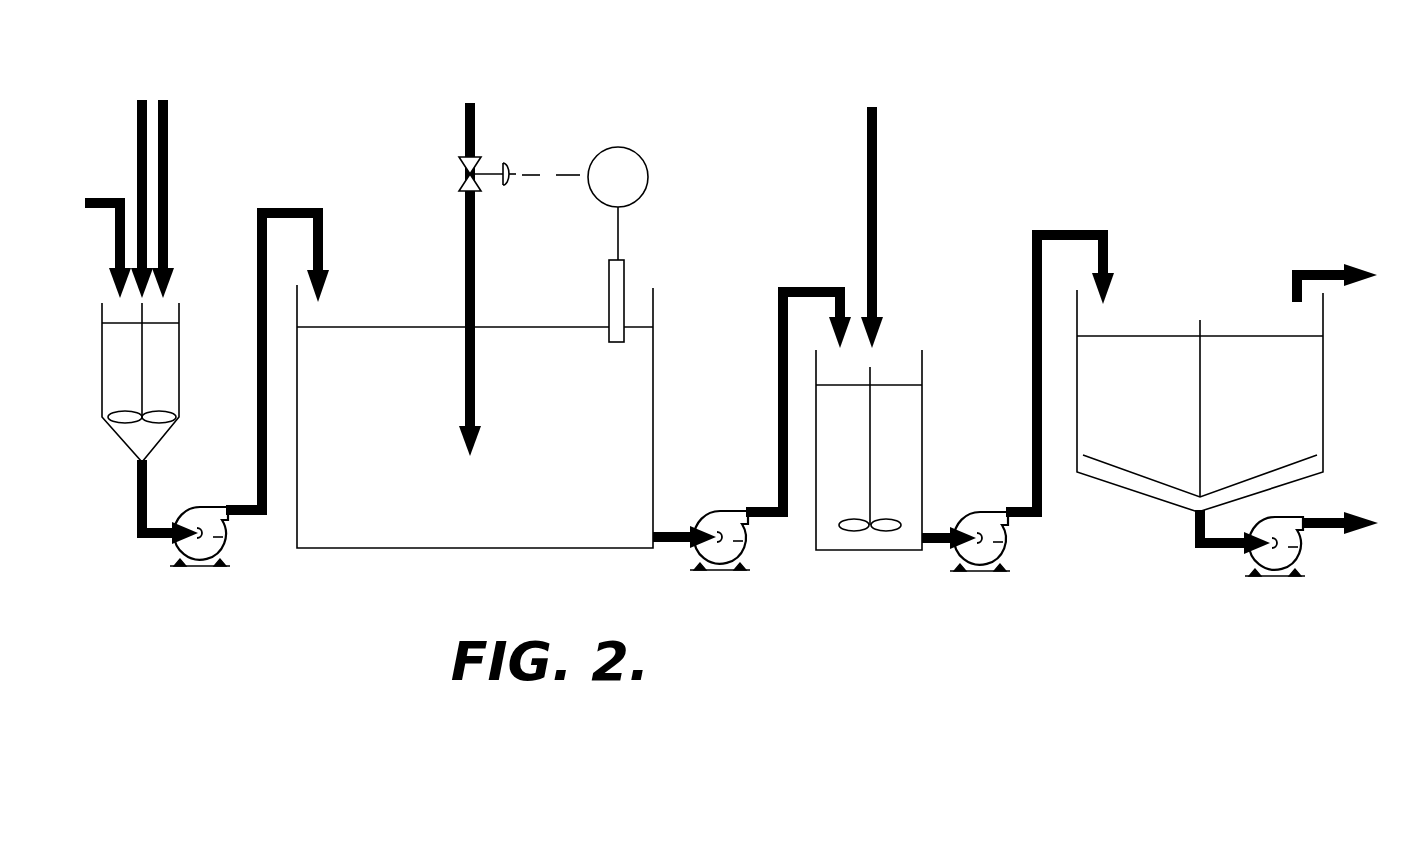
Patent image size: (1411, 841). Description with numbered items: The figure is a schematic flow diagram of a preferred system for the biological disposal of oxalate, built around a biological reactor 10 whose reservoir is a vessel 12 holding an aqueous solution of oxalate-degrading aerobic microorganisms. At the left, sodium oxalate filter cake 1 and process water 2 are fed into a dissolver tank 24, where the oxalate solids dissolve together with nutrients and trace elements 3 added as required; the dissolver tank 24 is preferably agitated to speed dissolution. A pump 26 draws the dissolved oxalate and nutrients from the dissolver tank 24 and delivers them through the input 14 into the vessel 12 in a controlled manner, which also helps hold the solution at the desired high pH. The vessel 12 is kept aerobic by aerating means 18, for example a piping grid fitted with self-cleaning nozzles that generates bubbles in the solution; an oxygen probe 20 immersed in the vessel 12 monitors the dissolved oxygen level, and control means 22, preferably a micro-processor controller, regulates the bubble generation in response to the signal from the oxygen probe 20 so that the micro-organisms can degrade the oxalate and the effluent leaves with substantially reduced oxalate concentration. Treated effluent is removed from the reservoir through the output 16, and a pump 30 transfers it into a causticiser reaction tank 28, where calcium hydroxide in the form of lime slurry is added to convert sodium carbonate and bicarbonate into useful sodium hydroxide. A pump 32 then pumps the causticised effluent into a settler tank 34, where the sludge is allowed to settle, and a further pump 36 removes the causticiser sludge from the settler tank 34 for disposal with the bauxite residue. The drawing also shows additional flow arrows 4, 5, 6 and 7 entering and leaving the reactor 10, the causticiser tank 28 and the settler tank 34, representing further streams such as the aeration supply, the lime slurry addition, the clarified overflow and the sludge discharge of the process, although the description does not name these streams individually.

The sodium oxalate filter cake 1 is at (98, 250).
The process water 2 is at (142, 180).
The nutrients and trace elements 3 is at (163, 180).
The oxidant feed line 4 is at (470, 259).
The neutralizing agent feed 5 is at (872, 205).
The treated effluent outlet 6 is at (1338, 267).
The sludge outlet 7 is at (1342, 535).
The biological reactor 10 is at (511, 329).
The vessel 12 is at (660, 386).
The input 14 is at (288, 208).
The output 16 is at (668, 530).
The aerating means 18 is at (520, 140).
The oxygen probe 20 is at (608, 293).
The control means 22 is at (648, 176).
The dissolver tank 24 is at (188, 380).
The pump 26 is at (222, 558).
The causticiser reaction tank 28 is at (930, 392).
The pump 30 is at (730, 562).
The pump 32 is at (1002, 565).
The settler tank 34 is at (1338, 386).
The pump 36 is at (1306, 548).